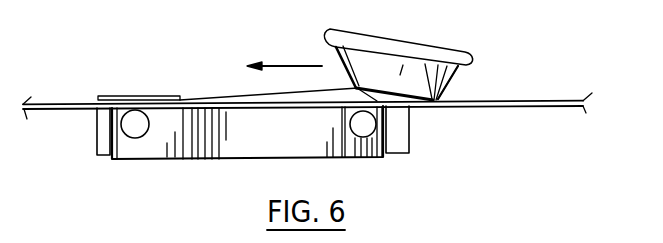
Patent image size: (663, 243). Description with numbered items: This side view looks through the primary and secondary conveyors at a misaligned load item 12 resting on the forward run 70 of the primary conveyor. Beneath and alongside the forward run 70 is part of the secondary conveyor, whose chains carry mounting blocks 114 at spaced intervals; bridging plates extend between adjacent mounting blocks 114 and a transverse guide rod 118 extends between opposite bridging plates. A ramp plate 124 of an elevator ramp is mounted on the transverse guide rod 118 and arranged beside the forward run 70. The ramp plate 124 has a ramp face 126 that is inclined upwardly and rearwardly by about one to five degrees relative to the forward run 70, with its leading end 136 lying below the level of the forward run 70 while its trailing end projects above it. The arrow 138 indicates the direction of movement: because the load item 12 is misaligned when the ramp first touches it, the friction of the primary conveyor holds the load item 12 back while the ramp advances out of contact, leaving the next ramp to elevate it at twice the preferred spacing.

The load item 12 is at (430, 52).
The forward run 70 is at (73, 103).
The mounting blocks 114 is at (97, 122).
The transverse guide rod 118 is at (138, 127).
The ramp plate 124 is at (241, 141).
The ramp face 126 is at (242, 96).
The leading end 136 is at (115, 119).
The direction arrow 138 is at (347, 97).